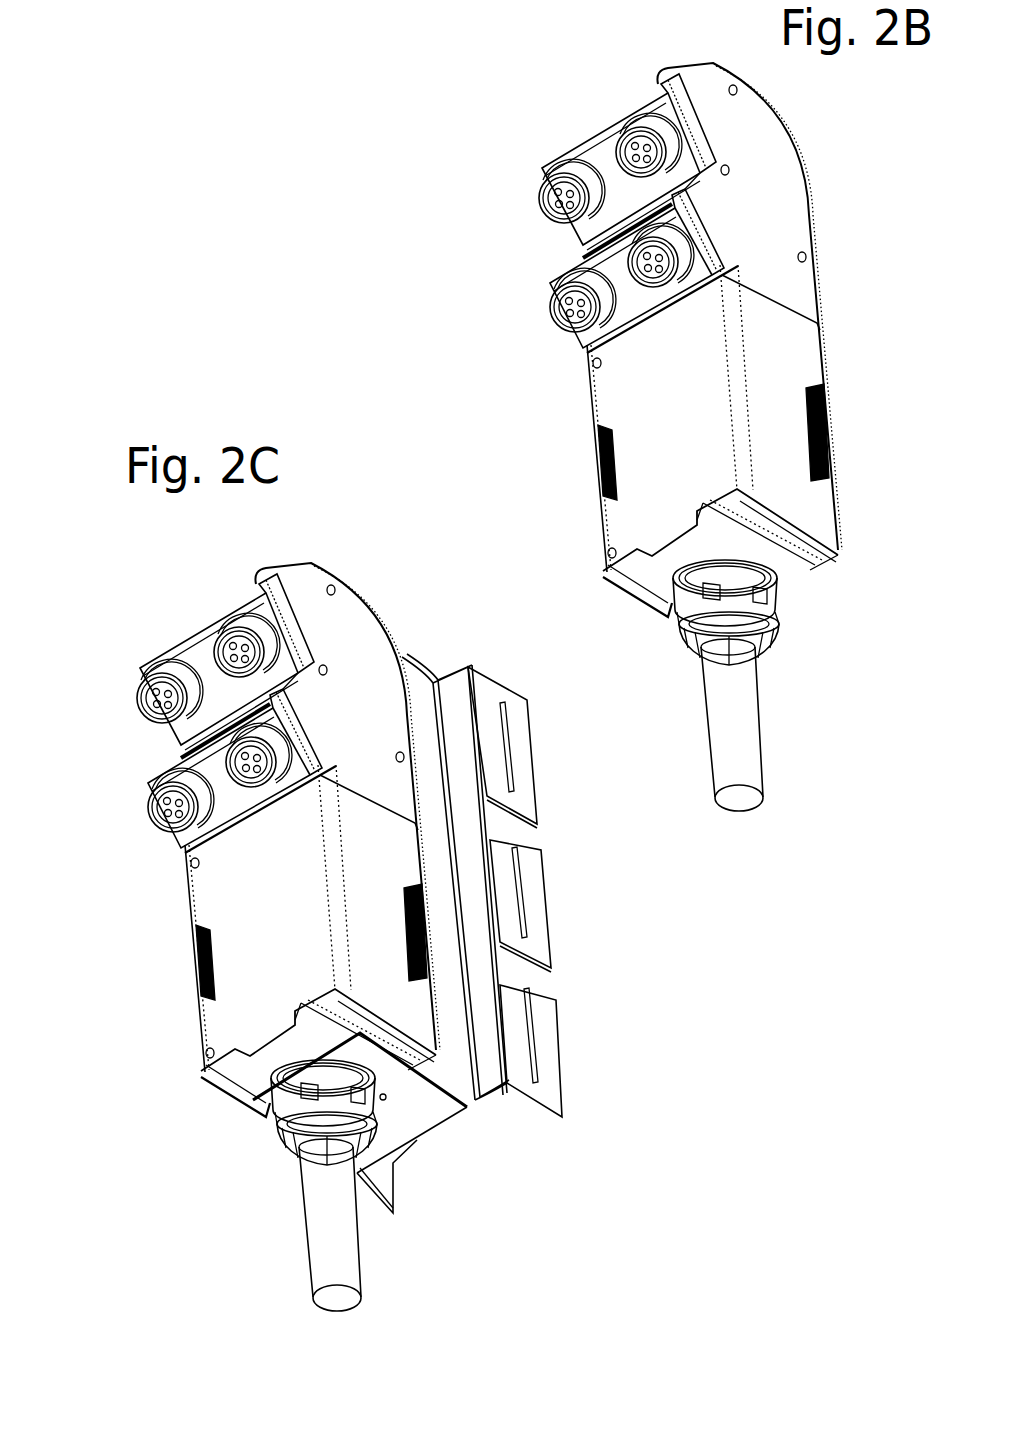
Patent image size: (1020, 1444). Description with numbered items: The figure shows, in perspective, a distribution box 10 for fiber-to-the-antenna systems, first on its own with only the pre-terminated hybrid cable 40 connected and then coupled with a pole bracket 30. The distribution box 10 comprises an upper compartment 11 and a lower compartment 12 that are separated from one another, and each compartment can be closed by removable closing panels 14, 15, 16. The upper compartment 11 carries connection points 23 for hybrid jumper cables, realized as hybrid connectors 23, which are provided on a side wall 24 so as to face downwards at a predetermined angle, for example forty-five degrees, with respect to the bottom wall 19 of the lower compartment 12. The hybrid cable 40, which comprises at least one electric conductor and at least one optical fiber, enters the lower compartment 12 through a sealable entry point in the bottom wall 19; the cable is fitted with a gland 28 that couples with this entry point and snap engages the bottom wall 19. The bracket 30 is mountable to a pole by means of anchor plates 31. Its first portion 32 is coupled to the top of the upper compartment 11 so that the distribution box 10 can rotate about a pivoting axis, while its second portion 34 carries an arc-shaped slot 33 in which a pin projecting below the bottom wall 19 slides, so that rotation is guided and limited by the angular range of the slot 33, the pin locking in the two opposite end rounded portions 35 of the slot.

In FIG. 2B, the distribution box 10 is at (846, 134).
In FIG. 2C, the distribution box 10 is at (440, 604).
In FIG. 2B, the upper compartment 11 is at (830, 238).
In FIG. 2C, the upper compartment 11 is at (415, 647).
In FIG. 2B, the lower compartment 12 is at (840, 372).
In FIG. 2C, the lower compartment 12 is at (180, 1040).
In FIG. 2B, the closing removable panel 14 is at (755, 125).
In FIG. 2C, the closing removable panel 14 is at (357, 627).
In FIG. 2B, the closing removable panel 15 is at (627, 390).
In FIG. 2C, the closing removable panel 15 is at (228, 890).
In FIG. 2B, the closing removable panel 16 is at (790, 514).
In FIG. 2C, the closing removable panel 16 is at (473, 1103).
In FIG. 2B, the bottom wall 19 is at (790, 563).
In FIG. 2C, the bottom wall 19 is at (323, 1093).
In FIG. 2B, the connection points 23 is at (627, 133).
In FIG. 2C, the connection points 23 is at (228, 630).
In FIG. 2B, the side wall 24 is at (597, 150).
In FIG. 2C, the side wall 24 is at (208, 648).
In FIG. 2B, the gland 28 is at (683, 655).
In FIG. 2C, the gland 28 is at (287, 1153).
In FIG. 2C, the bracket 30 is at (438, 918).
In FIG. 2C, the anchor plates 31 is at (530, 810).
In FIG. 2C, the first portion 32 is at (425, 665).
In FIG. 2C, the arc-shaped slot 33 is at (390, 1127).
In FIG. 2C, the second portion 34 is at (443, 1107).
In FIG. 2C, the end rounded portions 35 is at (390, 1098).
In FIG. 2B, the hybrid cable 40 is at (743, 723).
In FIG. 2C, the hybrid cable 40 is at (348, 1263).